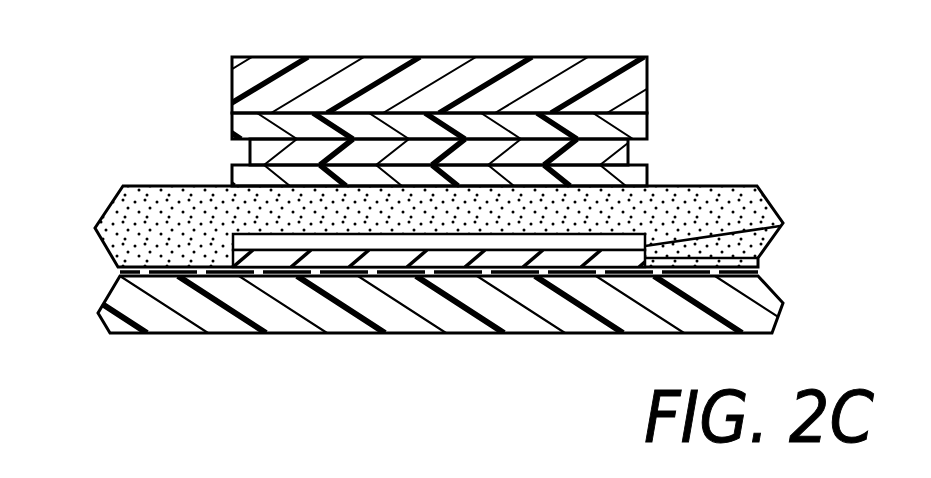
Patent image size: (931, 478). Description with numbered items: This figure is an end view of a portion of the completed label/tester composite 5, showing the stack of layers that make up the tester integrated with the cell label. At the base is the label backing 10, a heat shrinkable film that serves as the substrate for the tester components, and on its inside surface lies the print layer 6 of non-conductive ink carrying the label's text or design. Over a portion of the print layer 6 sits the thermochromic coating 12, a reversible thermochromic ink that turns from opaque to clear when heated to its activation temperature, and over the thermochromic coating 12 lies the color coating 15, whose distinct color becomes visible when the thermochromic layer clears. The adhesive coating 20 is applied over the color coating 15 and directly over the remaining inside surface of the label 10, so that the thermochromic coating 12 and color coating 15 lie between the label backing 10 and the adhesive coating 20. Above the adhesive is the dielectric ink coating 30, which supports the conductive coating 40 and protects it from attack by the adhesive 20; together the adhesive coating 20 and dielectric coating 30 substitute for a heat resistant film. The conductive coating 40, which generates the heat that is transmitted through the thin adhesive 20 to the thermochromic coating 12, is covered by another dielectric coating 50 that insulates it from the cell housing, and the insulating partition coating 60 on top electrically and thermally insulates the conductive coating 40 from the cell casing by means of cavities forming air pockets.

The label/tester composite 5 is at (525, 335).
The print layer 6 is at (118, 271).
The label backing 10 is at (783, 303).
The thermochromic coating 12 is at (758, 258).
The color coating 15 is at (783, 223).
The adhesive coating 20 is at (110, 207).
The dielectric ink coating 30 is at (233, 175).
The conductive coating 40 is at (250, 150).
The dielectric coating 50 is at (233, 122).
The insulating partition coating 60 is at (233, 87).